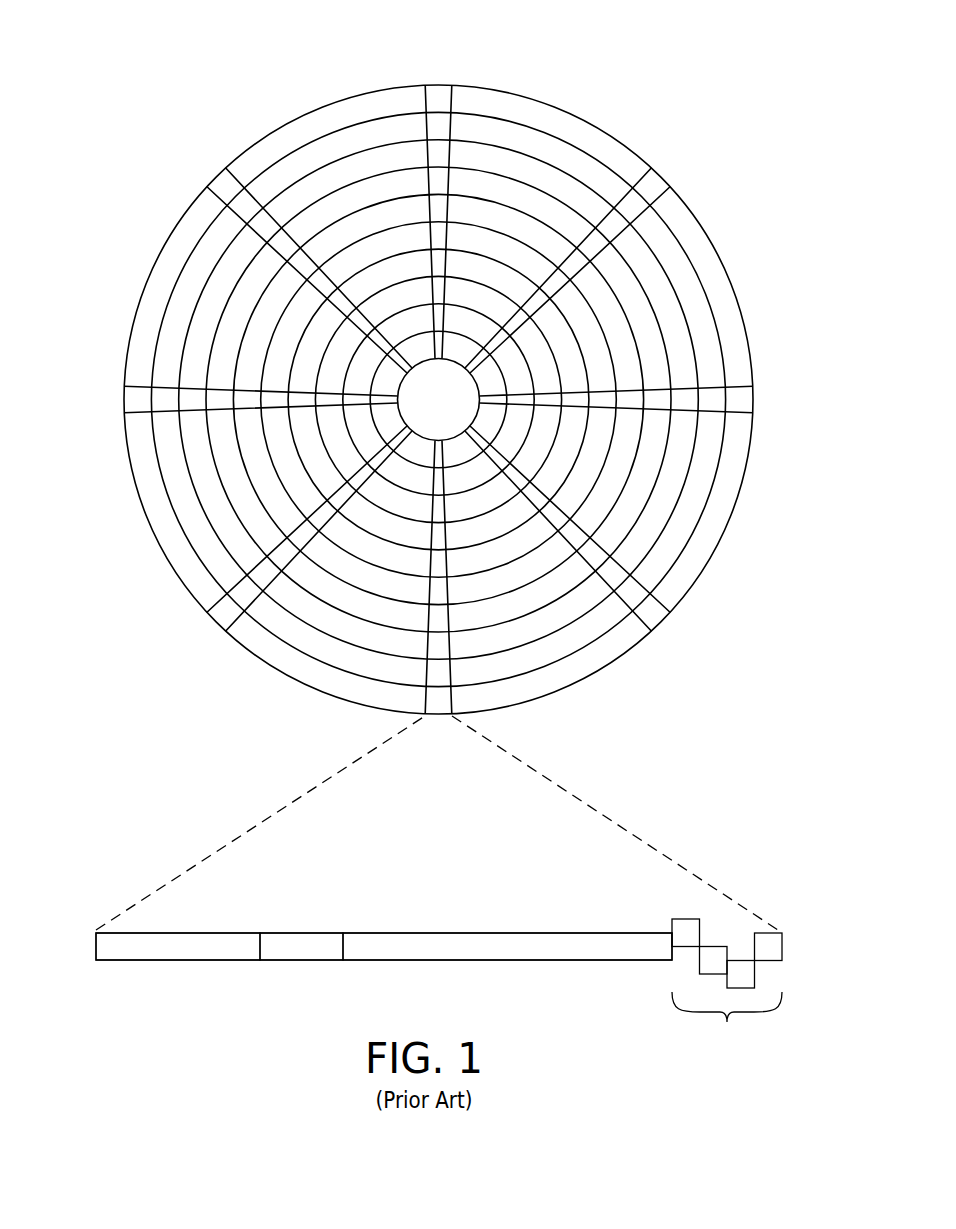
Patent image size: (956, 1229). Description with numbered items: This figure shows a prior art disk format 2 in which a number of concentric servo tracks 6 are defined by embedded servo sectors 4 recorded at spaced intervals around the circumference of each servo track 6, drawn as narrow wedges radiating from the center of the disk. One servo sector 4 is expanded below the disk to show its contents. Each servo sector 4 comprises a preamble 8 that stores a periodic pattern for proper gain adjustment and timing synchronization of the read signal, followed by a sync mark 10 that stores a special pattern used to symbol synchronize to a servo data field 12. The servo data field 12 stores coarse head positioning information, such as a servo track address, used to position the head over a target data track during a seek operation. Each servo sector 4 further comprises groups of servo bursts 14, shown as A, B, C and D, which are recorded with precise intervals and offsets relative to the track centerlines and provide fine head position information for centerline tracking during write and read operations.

The disk format 2 is at (203, 86).
The servo sector 4 is at (440, 409).
The servo track 6 is at (545, 148).
The preamble 8 is at (157, 960).
The sync mark 10 is at (298, 960).
The servo data field 12 is at (495, 960).
The servo bursts 14 is at (652, 898).